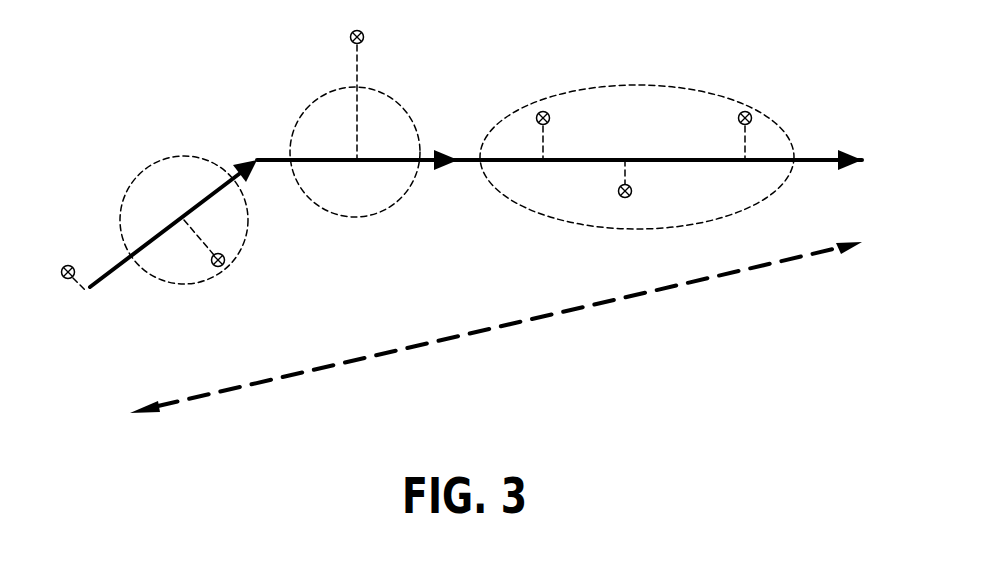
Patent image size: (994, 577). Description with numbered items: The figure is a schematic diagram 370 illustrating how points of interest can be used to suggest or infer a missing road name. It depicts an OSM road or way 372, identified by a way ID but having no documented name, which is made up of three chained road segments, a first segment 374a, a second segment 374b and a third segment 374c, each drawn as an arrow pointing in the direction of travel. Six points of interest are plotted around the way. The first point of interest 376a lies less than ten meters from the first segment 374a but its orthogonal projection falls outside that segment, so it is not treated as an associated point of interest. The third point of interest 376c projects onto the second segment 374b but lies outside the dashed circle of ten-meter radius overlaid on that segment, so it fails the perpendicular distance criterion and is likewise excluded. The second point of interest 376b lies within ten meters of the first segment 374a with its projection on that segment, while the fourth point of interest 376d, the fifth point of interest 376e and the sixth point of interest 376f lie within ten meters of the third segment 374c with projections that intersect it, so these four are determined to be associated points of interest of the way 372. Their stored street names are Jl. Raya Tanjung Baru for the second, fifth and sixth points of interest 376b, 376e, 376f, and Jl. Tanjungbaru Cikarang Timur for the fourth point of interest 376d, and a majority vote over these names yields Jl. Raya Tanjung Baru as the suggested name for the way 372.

The schematic diagram 370 is at (160, 82).
The way 372 is at (270, 142).
The first segment 374a is at (150, 195).
The second segment 374b is at (458, 221).
The third segment 374c is at (862, 46).
The POI 1 376a is at (65, 280).
The POI 2 376b is at (211, 263).
The POI 3 376c is at (350, 40).
The POI 4 376d is at (634, 189).
The POI 5 376e is at (536, 118).
The POI 6 376f is at (737, 120).